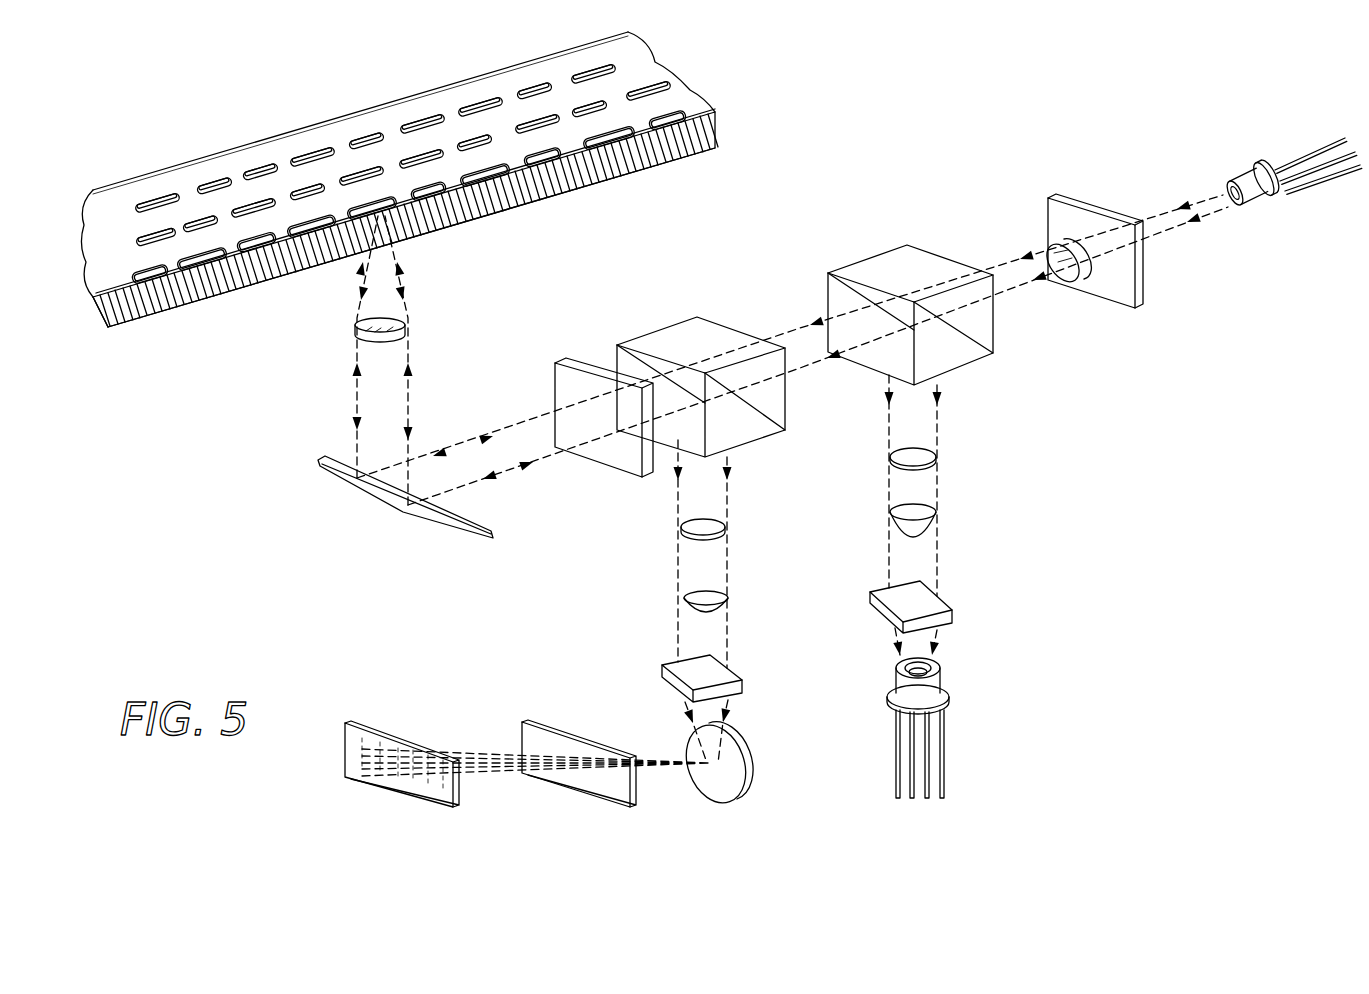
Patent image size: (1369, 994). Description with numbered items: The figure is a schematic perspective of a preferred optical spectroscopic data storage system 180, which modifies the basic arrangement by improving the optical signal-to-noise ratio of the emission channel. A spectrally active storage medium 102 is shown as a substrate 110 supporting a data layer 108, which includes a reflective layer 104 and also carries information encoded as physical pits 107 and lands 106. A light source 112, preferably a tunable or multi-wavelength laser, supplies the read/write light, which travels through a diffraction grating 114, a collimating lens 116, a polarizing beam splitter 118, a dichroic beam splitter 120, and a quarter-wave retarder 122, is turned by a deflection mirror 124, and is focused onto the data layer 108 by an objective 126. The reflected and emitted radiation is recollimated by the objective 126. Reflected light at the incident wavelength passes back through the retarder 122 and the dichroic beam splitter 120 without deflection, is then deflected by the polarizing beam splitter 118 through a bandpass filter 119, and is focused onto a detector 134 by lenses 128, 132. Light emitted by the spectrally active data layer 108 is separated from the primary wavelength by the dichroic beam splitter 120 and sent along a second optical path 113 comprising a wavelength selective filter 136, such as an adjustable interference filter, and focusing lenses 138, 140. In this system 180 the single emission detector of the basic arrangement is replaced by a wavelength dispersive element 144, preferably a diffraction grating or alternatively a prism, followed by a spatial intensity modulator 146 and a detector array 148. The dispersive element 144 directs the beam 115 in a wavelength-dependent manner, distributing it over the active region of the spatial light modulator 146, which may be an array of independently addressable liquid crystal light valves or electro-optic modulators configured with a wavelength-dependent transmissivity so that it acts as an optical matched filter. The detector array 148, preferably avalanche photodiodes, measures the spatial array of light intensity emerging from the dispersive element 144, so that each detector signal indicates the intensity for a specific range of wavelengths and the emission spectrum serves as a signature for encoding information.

The spectrally active storage medium 102 is at (442, 214).
The reflective layer 104 is at (548, 178).
The lands 106 is at (650, 118).
The physical pits 107 is at (668, 80).
The data layer 108 is at (204, 280).
The substrate 110 is at (113, 318).
The light source 112 is at (1277, 207).
The second optical path 113 is at (665, 550).
The diffraction grating 114 is at (1143, 292).
The beam 115 is at (655, 772).
The collimating lens 116 is at (1066, 276).
The polarizing beam splitter 118 is at (997, 345).
The bandpass filter 119 is at (937, 463).
The dichroic beam splitter 120 is at (786, 425).
The λ/4 retarder 122 is at (630, 470).
The deflection mirror 124 is at (440, 530).
The objective 126 is at (365, 336).
The lens 128 is at (937, 527).
The lens 132 is at (953, 609).
The detector 134 is at (942, 687).
The wavelength selective filter 136 is at (722, 537).
The focusing lens 138 is at (730, 605).
The focusing lens 140 is at (745, 685).
The wavelength dispersive element 144 is at (752, 768).
The spatial intensity modulator 146 is at (576, 722).
The detector array 148 is at (376, 722).
The system 180 is at (936, 98).